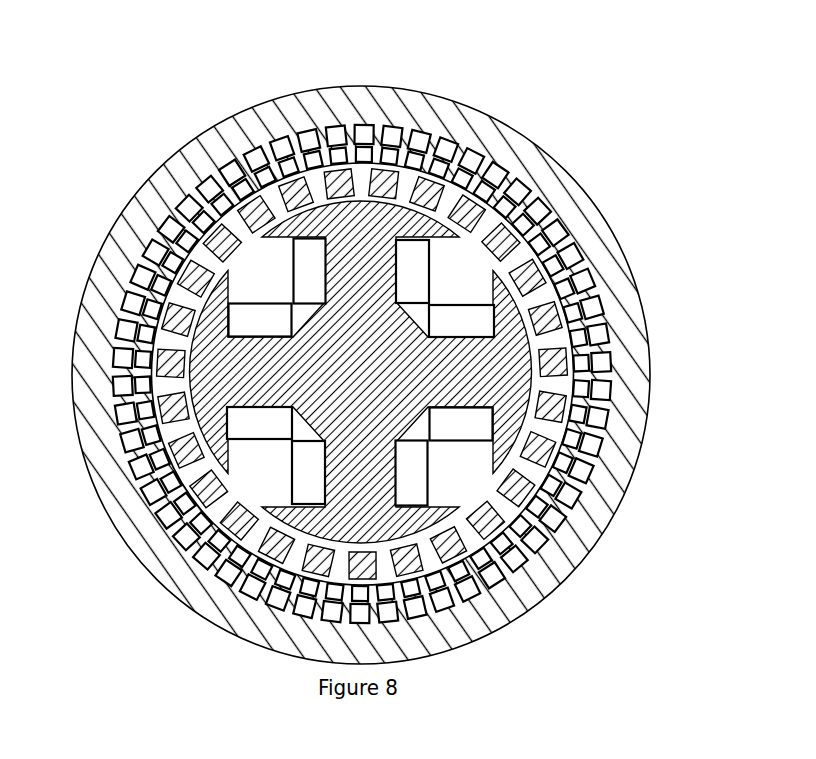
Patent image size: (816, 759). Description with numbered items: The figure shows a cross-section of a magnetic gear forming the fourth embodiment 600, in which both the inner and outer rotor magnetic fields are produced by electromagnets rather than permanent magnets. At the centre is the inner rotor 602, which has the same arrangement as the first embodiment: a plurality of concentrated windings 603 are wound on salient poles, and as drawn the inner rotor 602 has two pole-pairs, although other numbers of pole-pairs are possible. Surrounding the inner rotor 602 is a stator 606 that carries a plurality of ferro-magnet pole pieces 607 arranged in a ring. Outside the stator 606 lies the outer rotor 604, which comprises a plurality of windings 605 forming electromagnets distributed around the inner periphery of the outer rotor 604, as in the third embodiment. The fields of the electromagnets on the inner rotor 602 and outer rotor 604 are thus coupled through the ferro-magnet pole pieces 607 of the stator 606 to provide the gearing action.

The fourth embodiment 600 is at (550, 590).
The inner rotor 602 is at (392, 392).
The concentrated windings 603 is at (455, 313).
The outer rotor 604 is at (388, 105).
The windings 605 is at (450, 133).
The stator 606 is at (484, 225).
The ferro-magnet pole pieces 607 is at (507, 237).